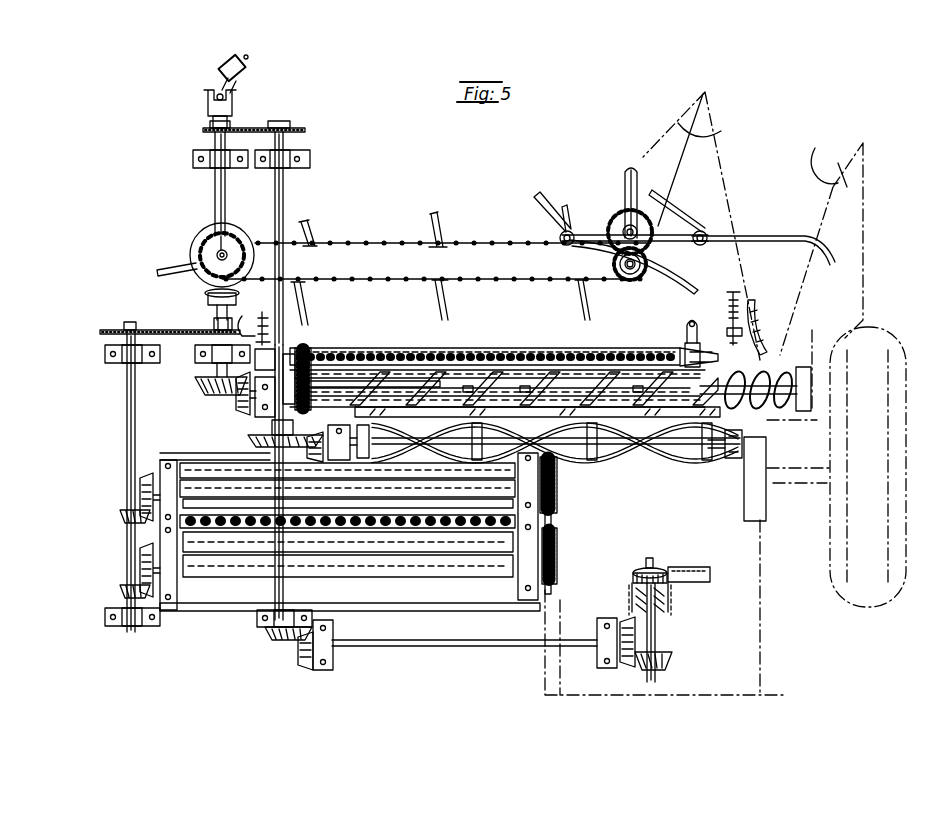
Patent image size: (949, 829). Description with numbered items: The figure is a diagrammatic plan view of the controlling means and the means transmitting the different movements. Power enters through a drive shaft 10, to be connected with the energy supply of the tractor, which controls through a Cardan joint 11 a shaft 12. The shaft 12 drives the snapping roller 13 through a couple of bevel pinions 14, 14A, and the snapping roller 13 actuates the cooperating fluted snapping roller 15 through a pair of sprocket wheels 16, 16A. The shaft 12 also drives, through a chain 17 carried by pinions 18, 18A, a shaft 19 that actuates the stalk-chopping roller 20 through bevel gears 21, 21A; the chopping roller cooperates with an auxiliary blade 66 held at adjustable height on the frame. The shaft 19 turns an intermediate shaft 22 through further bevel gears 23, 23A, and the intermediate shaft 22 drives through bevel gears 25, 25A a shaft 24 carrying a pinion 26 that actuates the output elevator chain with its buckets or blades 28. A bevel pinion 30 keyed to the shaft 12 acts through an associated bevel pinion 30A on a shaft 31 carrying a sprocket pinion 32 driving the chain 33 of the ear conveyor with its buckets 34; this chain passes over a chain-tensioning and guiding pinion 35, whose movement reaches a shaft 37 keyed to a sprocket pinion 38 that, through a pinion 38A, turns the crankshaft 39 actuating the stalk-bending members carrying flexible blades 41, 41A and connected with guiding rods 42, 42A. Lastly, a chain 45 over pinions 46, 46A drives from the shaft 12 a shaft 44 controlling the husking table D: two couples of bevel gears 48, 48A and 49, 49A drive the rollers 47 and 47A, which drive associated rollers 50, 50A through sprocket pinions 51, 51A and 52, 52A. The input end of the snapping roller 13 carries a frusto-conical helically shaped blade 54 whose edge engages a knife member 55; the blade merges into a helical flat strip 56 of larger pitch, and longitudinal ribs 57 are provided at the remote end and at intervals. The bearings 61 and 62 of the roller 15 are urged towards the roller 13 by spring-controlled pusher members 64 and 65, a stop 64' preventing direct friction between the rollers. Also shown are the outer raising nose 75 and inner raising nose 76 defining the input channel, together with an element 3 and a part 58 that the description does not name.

The wheel 3 is at (893, 455).
The drive shaft 10 is at (246, 68).
The Cardan joint 11 is at (233, 98).
The shaft 12 is at (214, 185).
The snapping roller 13 is at (500, 375).
The bevel pinion 14 is at (203, 388).
The bevel pinion 14A is at (238, 400).
The cooperating snapping roller 15 is at (477, 348).
The sprocket wheel 16 is at (333, 362).
The sprocket wheel 16A is at (300, 352).
The chain 17 is at (249, 127).
The pinion 18 is at (212, 127).
The pinion 18A is at (290, 124).
The shaft 19 is at (284, 186).
The stalk-chopping roller 20 is at (605, 462).
The bevel gear 21 is at (252, 436).
The bevel gear 21A is at (320, 431).
The intermediate shaft 22 is at (440, 642).
The bevel gear 23 is at (275, 640).
The bevel gear 23A is at (300, 655).
The shaft 24 is at (660, 635).
The bevel gear 25 is at (628, 660).
The bevel gear 25A is at (674, 660).
The pinion 26 is at (655, 565).
The buckets or blades 28 is at (696, 567).
The bevel pinion 30 is at (212, 300).
The bevel pinion 30A is at (206, 280).
The shaft 31 is at (214, 255).
The sprocket pinion 32 is at (226, 247).
The chain 33 is at (334, 246).
The buckets 34 is at (430, 224).
The chain-tensioning and guiding pinion 35 is at (635, 282).
The shaft 37 is at (614, 263).
The sprocket pinion 38 is at (648, 270).
The pinion 38A is at (647, 236).
The crankshaft 39 is at (660, 228).
The flexible blade 41 is at (757, 243).
The flexible blade 41A is at (688, 275).
The guiding rod 42 is at (680, 224).
The guiding rod 42A is at (560, 215).
The shaft 44 is at (127, 440).
The chain 45 is at (146, 330).
The pinion 46 is at (220, 332).
The pinion 46A is at (125, 330).
The roller 47 is at (223, 500).
The roller 47A is at (230, 545).
The bevel gear 48 is at (125, 515).
The bevel gear 48A is at (140, 490).
The bevel gear 49 is at (125, 591).
The bevel gear 49A is at (140, 566).
The associated roller 50 is at (195, 468).
The associated roller 50A is at (192, 580).
The sprocket pinion 51 is at (558, 505).
The sprocket pinion 51A is at (558, 486).
The sprocket pinion 52 is at (558, 570).
The sprocket pinion 52A is at (558, 547).
The helically shaped blade 54 is at (790, 363).
The member 55 is at (770, 302).
The flat strip 56 is at (548, 380).
The longitudinal ribs 57 is at (415, 380).
The base plate 58 is at (642, 400).
The bearing 61 is at (700, 352).
The bearing 62 is at (272, 353).
The spring-controlled pusher member 64 is at (719, 318).
The stop 64' is at (678, 333).
The spring-controlled pusher member 65 is at (260, 312).
The auxiliary blade 66 is at (717, 413).
The outer raising nose 75 is at (816, 150).
The inner raising nose 76 is at (712, 117).
The husking table D is at (177, 628).